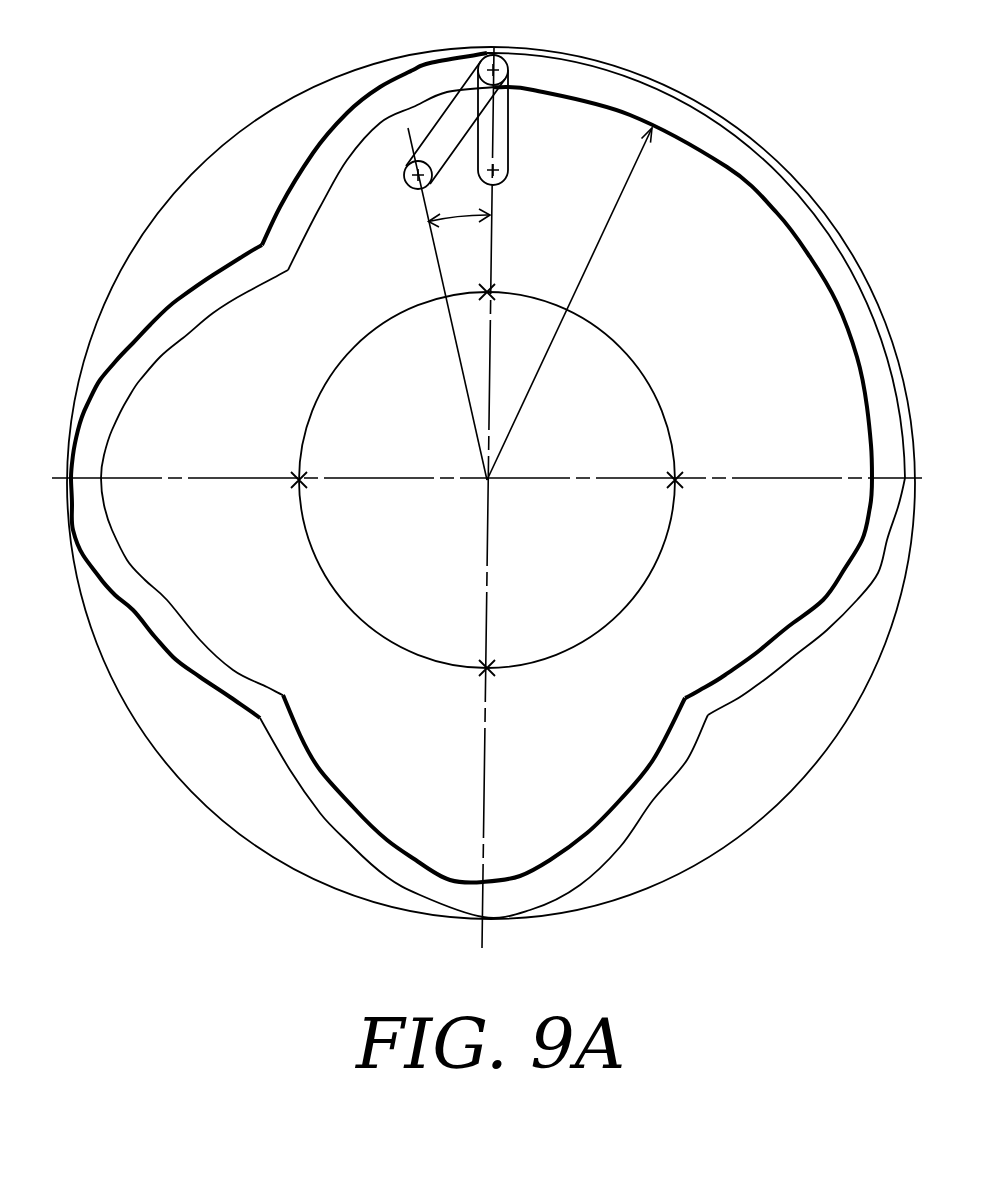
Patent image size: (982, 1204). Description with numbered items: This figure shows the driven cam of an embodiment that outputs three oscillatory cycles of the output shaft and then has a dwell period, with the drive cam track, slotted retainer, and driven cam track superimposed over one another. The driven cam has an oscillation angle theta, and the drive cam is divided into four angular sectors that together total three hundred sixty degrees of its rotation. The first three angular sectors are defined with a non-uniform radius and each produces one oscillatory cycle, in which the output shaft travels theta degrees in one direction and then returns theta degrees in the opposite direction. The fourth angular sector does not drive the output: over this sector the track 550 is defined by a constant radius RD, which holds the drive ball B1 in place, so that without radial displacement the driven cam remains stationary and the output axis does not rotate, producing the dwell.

The track 550 is at (752, 172).
The drive ball B1 is at (504, 62).
The constant radius RD is at (602, 238).